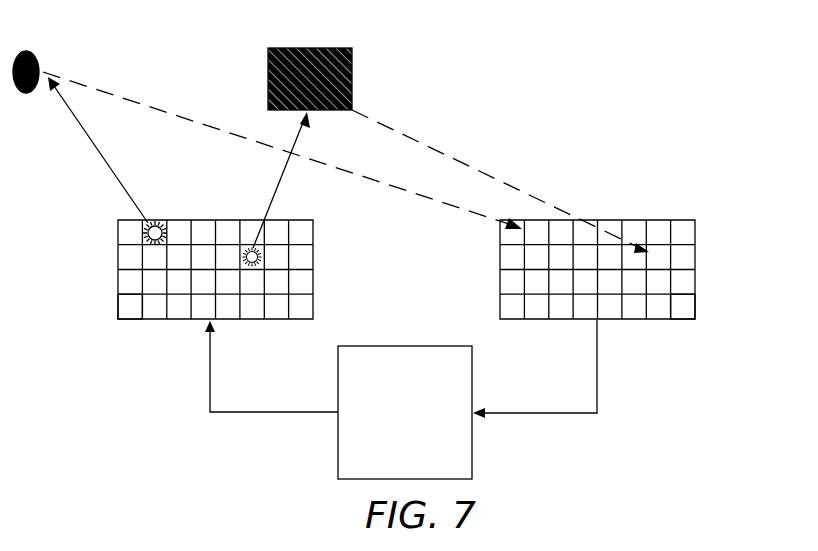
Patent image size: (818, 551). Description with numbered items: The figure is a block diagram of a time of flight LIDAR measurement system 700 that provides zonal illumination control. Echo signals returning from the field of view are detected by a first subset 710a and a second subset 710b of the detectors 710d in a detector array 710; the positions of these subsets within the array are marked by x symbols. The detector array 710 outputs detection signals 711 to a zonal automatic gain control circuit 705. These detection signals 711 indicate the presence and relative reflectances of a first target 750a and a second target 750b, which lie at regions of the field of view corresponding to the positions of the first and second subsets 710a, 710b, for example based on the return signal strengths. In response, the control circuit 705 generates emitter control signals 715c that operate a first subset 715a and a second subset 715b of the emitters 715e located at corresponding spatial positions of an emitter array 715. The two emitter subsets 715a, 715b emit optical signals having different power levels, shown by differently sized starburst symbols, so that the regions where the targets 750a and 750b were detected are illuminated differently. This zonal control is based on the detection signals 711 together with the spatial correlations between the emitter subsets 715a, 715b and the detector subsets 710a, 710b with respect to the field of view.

The time of flight LIDAR measurement system 700 is at (672, 88).
The zonal automatic gain control circuit 705 is at (405, 412).
The detector array 710 is at (695, 232).
The first subset of detectors 710a is at (530, 245).
The second subset of detectors 710b is at (660, 246).
The detectors 710d is at (682, 304).
The detection signals 711 is at (565, 413).
The emitter array 715 is at (118, 232).
The first subset of emitters 715a is at (146, 236).
The second subset of emitters 715b is at (262, 258).
The emitter control signals 715c is at (272, 412).
The emitters 715e is at (133, 306).
The first target 750a is at (33, 52).
The second target 750b is at (351, 50).